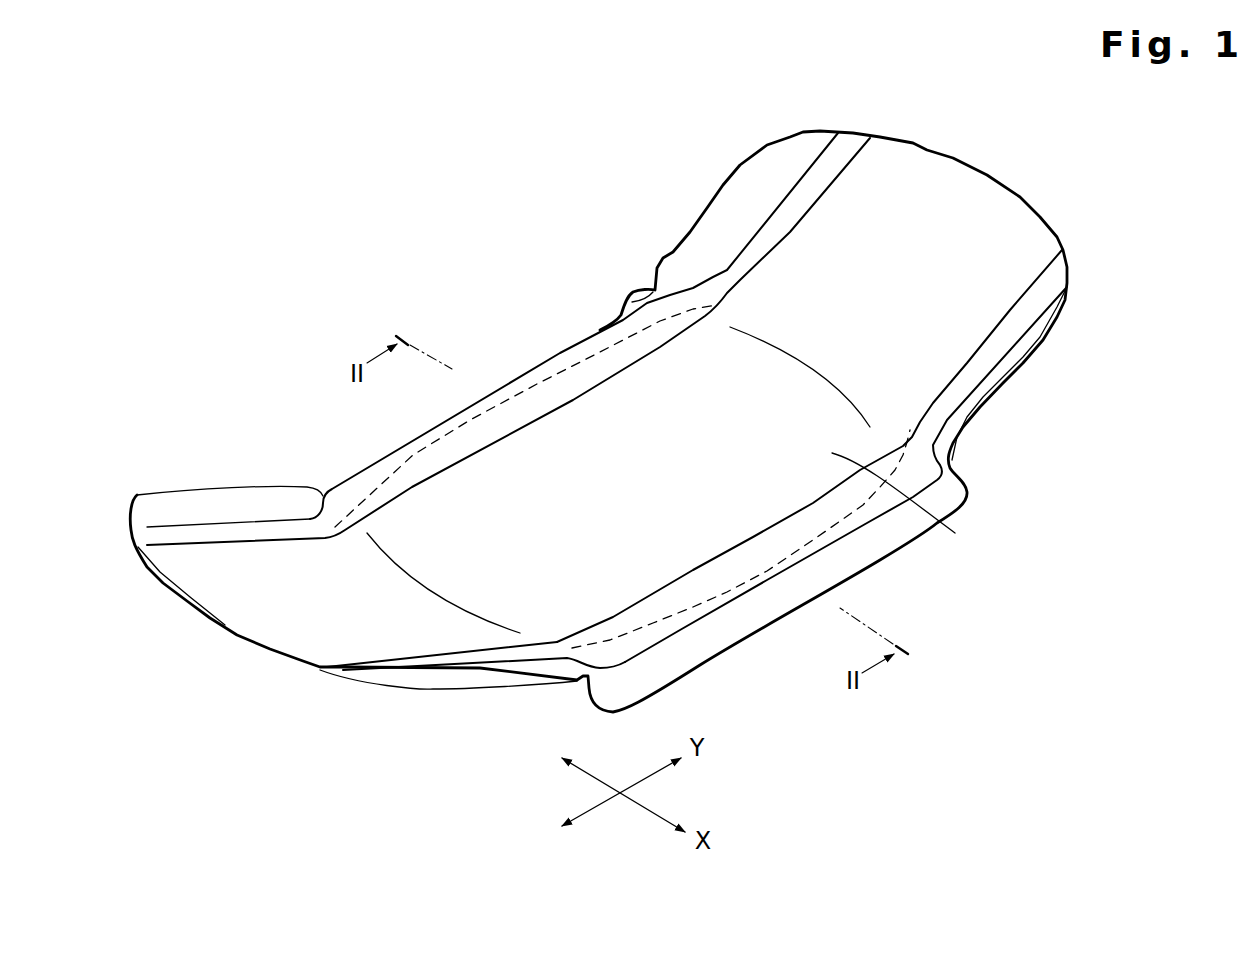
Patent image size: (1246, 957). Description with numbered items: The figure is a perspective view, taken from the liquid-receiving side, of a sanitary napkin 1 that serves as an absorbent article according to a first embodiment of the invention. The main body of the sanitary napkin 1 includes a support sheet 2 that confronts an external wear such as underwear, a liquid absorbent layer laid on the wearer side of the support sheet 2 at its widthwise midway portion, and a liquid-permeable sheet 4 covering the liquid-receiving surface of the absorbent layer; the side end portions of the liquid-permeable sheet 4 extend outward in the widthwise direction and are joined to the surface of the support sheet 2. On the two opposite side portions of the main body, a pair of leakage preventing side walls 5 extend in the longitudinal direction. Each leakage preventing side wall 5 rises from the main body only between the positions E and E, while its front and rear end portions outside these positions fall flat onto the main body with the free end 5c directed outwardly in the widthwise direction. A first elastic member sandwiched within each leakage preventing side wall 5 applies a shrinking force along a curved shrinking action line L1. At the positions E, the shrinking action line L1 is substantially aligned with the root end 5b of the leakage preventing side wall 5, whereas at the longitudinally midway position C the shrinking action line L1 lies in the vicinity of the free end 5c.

The sanitary napkin 1 is at (1091, 241).
The support sheet 2 is at (428, 690).
The liquid-permeable sheet 4 is at (955, 533).
The leakage preventing side wall 5 is at (520, 370).
The root end 5b is at (610, 378).
The free end 5c is at (433, 428).
The midway position C is at (507, 403).
The shrinking action line L1 is at (470, 431).
The end position E is at (736, 308).